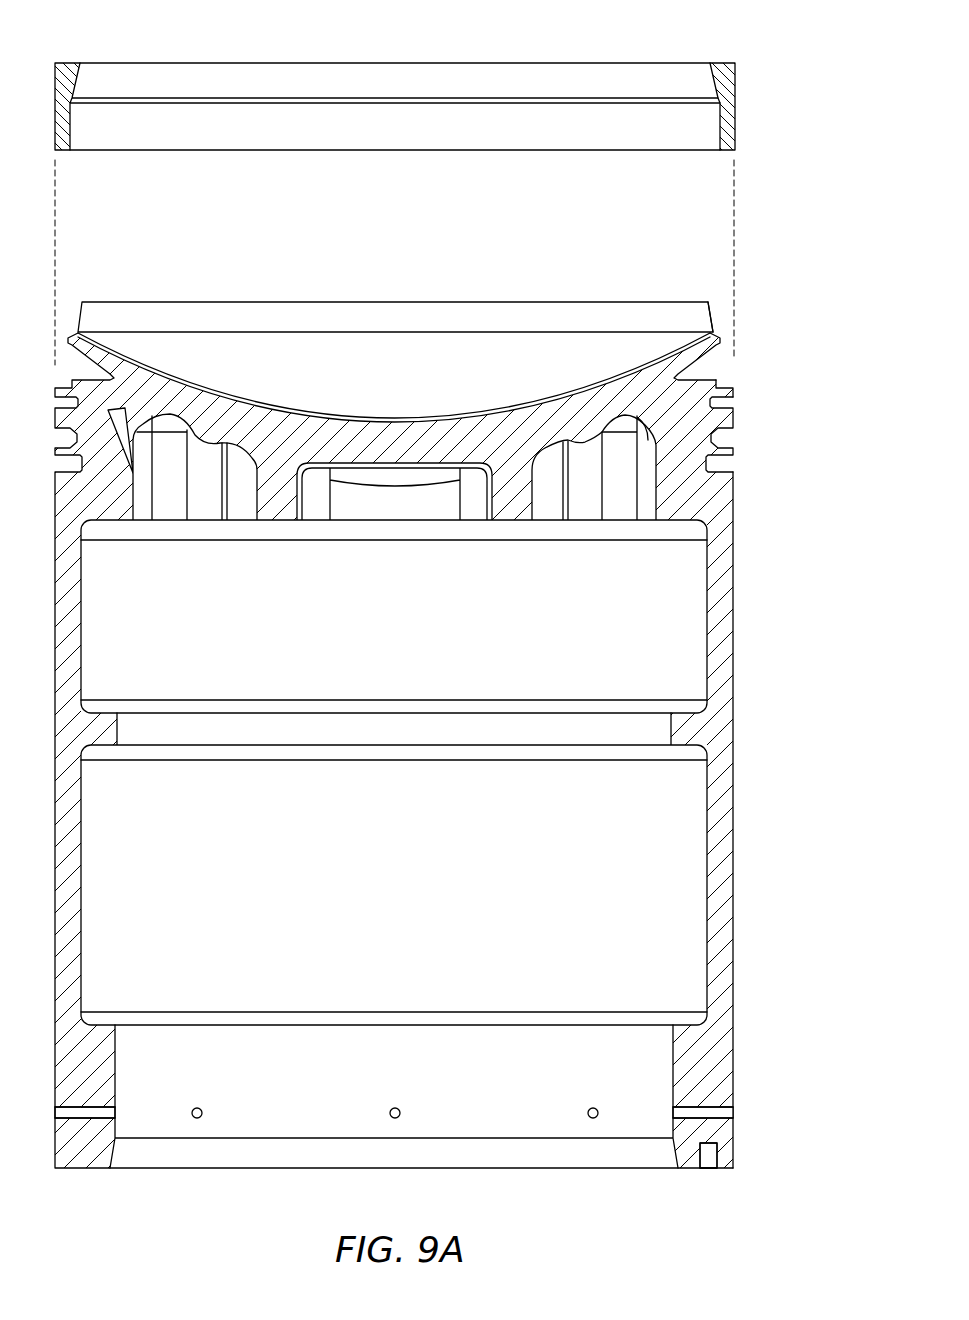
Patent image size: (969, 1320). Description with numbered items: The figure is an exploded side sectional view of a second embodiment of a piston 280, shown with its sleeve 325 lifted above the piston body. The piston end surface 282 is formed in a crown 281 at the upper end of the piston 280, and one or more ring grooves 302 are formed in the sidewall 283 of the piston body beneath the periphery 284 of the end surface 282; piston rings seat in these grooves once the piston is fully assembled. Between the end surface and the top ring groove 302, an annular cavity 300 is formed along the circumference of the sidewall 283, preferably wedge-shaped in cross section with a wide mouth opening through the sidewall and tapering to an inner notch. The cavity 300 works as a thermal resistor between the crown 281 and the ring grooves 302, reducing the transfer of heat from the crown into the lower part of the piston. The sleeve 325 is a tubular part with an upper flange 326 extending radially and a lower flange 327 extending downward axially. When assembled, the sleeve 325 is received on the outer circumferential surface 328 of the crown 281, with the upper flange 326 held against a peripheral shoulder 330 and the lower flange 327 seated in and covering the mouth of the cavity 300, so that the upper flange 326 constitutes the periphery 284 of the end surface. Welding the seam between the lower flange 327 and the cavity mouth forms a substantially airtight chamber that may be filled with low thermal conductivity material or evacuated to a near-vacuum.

The piston 280 is at (451, 692).
The crown 281 is at (442, 274).
The piston end surface 282 is at (195, 365).
The sidewall 283 is at (735, 600).
The periphery of the end surface 284 is at (718, 63).
The annular cavity 300 is at (700, 367).
The ring grooves 302 is at (722, 405).
The sleeve 325 is at (440, 90).
The upper flange 326 is at (735, 82).
The lower flange 327 is at (735, 132).
The outer circumferential surface 328 is at (710, 305).
The peripheral shoulder 330 is at (715, 338).